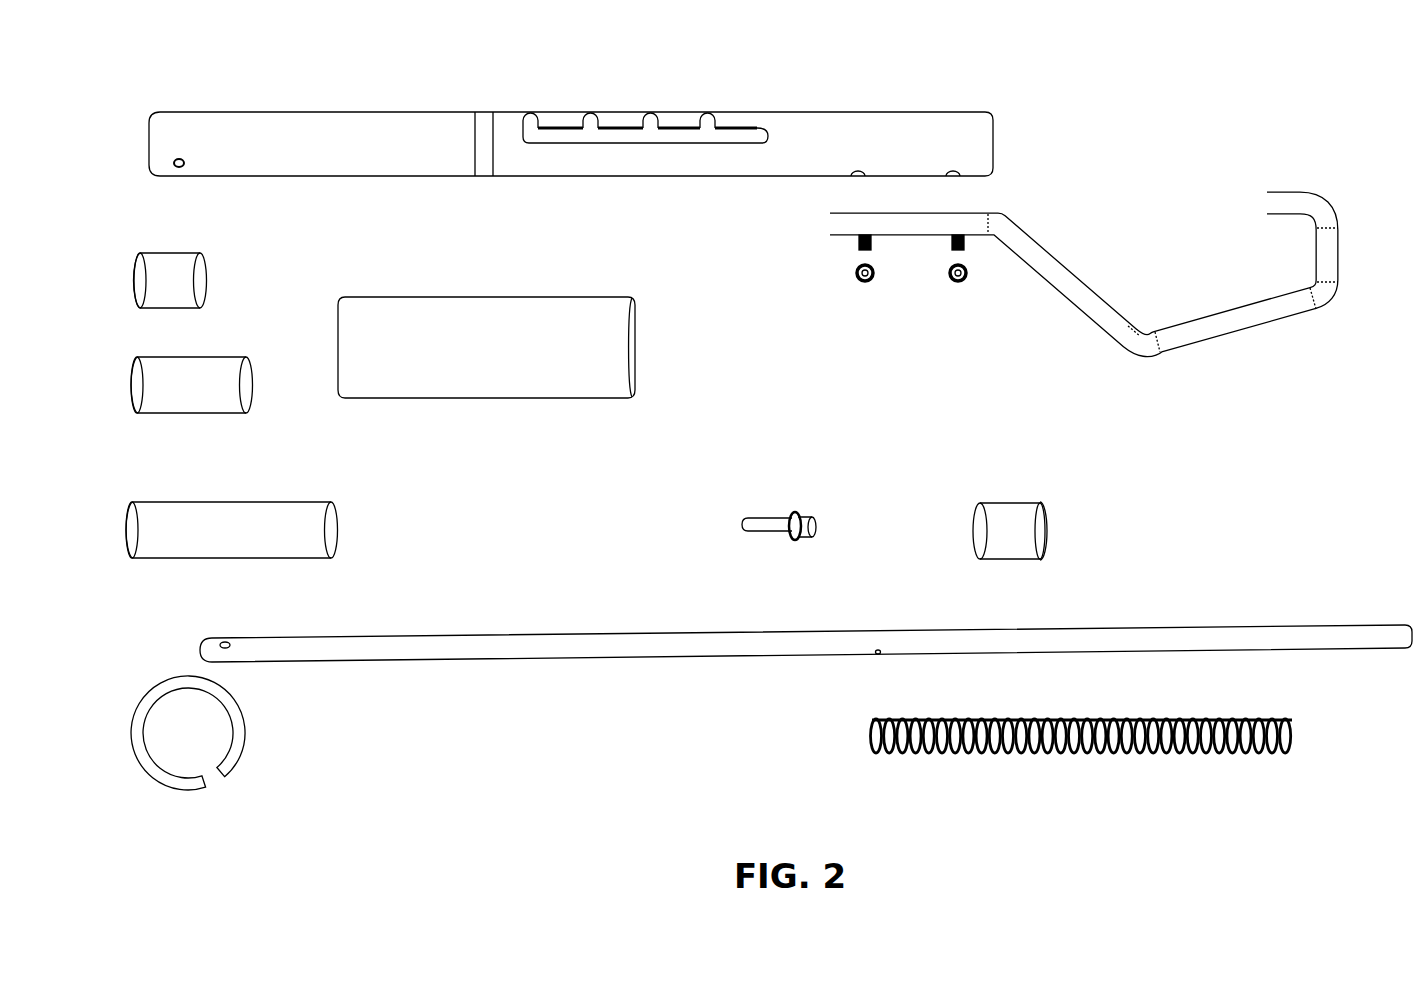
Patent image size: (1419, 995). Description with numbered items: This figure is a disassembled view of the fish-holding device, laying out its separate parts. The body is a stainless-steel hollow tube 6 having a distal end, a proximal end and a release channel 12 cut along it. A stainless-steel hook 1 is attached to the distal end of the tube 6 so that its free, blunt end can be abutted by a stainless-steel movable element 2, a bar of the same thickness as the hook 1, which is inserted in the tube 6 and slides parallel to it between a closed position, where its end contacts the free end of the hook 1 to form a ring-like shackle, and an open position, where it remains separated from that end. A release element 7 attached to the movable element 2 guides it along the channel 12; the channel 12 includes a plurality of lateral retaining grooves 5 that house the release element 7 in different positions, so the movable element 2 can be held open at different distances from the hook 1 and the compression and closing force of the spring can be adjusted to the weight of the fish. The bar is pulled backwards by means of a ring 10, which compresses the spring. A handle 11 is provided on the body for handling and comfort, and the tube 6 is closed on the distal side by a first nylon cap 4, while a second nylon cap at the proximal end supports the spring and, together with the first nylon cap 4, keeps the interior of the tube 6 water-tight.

The hook 1 is at (1296, 200).
The movable element 2 is at (601, 645).
The first nylon cap 4 is at (1009, 510).
The lateral retaining grooves 5 is at (700, 110).
The hollow tube 6 is at (893, 138).
The release element 7 is at (776, 520).
The ring 10 is at (188, 783).
The handle 11 is at (540, 377).
The channel 12 is at (680, 135).